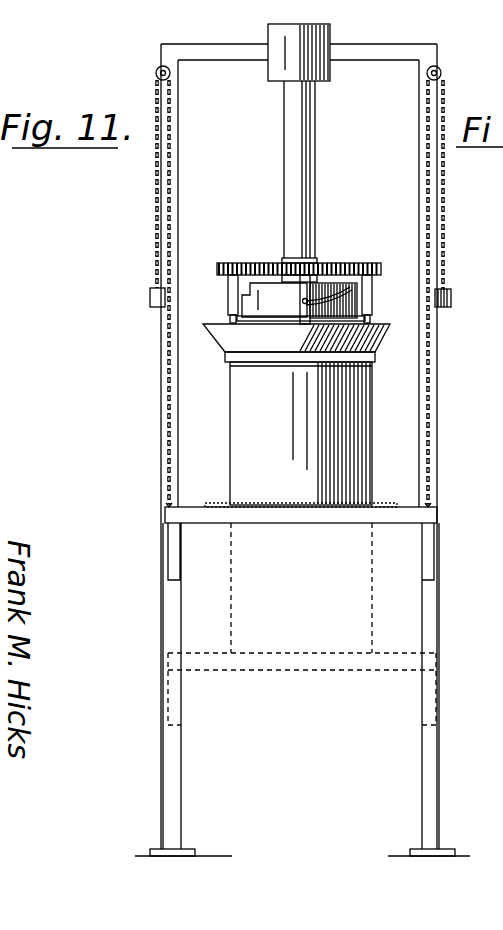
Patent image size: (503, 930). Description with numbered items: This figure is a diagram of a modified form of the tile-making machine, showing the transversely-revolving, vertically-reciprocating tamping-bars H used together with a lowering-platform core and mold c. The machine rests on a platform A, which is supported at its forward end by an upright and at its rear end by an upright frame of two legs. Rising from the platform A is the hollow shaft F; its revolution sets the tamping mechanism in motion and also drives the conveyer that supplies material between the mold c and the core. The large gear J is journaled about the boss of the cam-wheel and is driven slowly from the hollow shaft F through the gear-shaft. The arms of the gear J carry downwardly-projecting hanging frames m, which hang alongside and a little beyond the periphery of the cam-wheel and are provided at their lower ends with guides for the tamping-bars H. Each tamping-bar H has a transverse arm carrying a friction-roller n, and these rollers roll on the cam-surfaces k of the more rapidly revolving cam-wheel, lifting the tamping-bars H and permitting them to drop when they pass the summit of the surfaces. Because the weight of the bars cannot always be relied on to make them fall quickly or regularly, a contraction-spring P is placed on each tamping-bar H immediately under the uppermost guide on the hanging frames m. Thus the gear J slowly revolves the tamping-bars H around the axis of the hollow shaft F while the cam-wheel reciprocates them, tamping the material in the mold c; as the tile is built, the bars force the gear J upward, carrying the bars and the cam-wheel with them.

The platform A is at (297, 518).
The hollow shaft F is at (305, 160).
The large gear J is at (299, 263).
The hanging frames m is at (229, 292).
The tamping-bars H is at (238, 317).
The cam-surfaces k is at (300, 297).
The friction-rollers n is at (345, 290).
The contraction-spring P is at (257, 345).
The mold c is at (322, 398).